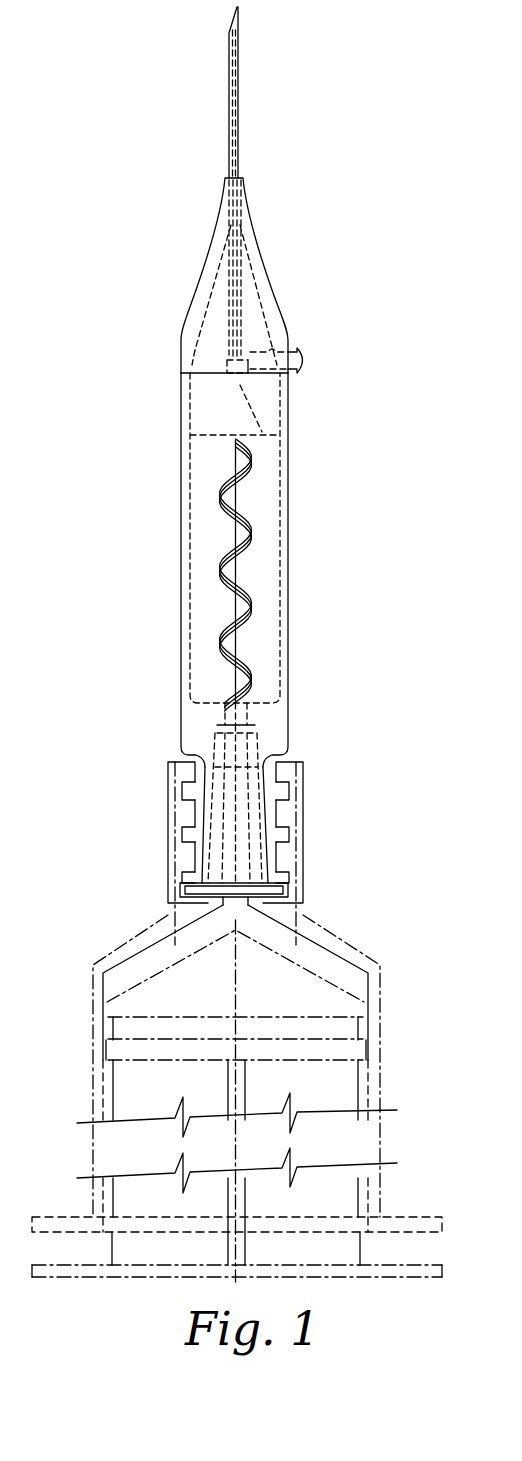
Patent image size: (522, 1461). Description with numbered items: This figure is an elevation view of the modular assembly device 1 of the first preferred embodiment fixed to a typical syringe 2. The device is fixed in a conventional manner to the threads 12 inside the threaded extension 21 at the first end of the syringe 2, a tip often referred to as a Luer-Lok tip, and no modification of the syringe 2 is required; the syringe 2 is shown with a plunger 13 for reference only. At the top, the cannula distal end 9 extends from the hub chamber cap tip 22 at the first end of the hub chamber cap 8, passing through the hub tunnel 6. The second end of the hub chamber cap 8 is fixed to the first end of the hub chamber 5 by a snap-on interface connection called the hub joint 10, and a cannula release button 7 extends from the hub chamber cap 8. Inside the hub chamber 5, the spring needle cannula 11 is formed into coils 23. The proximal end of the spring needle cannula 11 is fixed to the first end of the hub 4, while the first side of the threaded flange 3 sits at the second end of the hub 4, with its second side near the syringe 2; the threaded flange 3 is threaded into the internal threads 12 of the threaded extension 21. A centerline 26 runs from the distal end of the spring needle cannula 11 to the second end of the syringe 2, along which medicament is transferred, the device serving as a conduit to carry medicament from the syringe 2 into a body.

The modular assembly device 1 is at (403, 238).
The syringe 2 is at (381, 1018).
The threaded flange 3 is at (182, 898).
The hub 4 is at (204, 828).
The hub chamber 5 is at (181, 542).
The hub tunnel 6 is at (231, 223).
The cannula release button 7 is at (308, 355).
The hub chamber cap 8 is at (258, 252).
The cannula distal end 9 is at (238, 92).
The hub joint 10 is at (207, 373).
The spring needle cannula 11 is at (258, 523).
The threads 12 is at (285, 852).
The plunger 13 is at (307, 1060).
The threaded extension 21 is at (303, 868).
The hub chamber cap tip 22 is at (239, 199).
The coils 23 is at (250, 608).
The centerline 26 is at (237, 970).